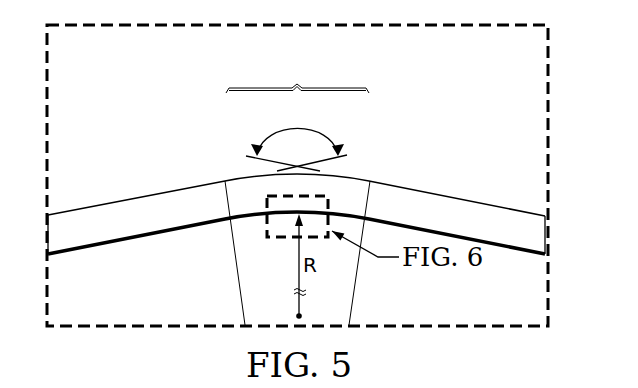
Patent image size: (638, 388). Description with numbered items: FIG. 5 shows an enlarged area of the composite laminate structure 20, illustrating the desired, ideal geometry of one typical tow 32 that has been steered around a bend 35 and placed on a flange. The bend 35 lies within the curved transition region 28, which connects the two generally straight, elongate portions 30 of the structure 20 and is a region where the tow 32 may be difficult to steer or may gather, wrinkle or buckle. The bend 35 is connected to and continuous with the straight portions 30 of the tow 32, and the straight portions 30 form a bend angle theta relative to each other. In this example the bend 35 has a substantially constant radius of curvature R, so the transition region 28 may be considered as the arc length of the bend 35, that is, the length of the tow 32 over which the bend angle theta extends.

The composite laminate structure 20 is at (183, 123).
The transition region 28 is at (297, 73).
The straight portions 30 is at (128, 202).
The tow 32 is at (150, 237).
The bend 35 is at (371, 167).